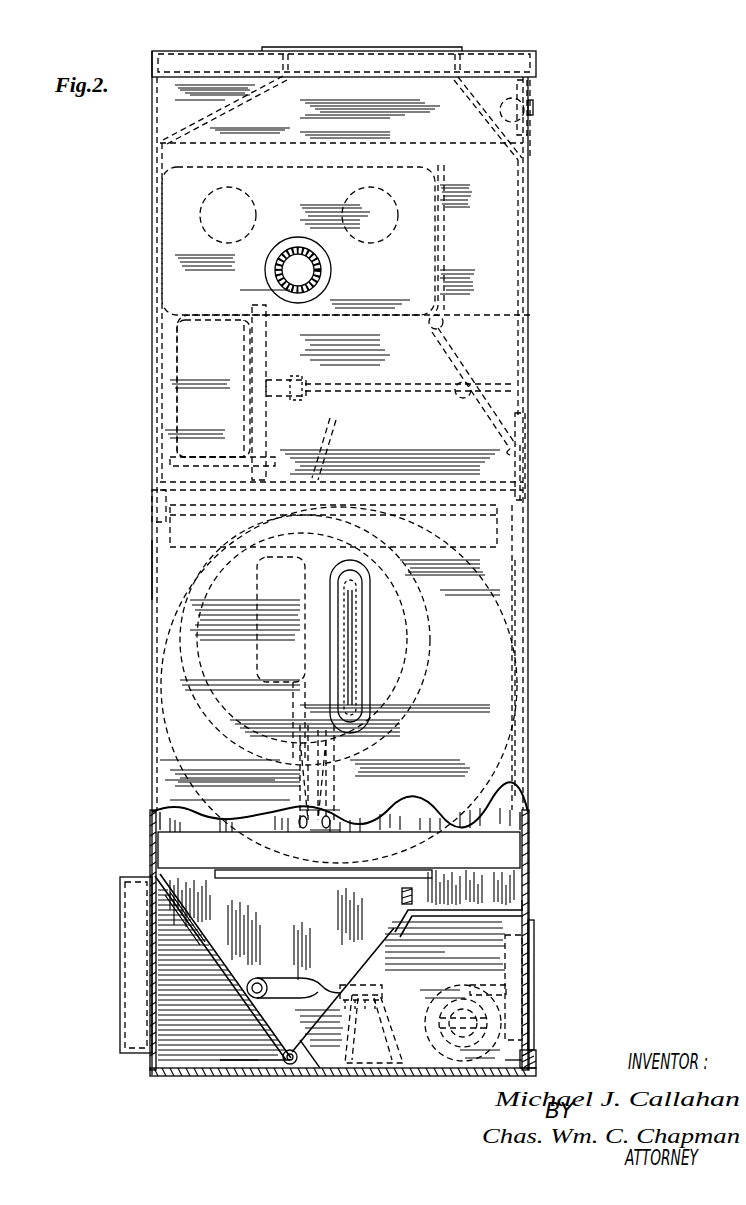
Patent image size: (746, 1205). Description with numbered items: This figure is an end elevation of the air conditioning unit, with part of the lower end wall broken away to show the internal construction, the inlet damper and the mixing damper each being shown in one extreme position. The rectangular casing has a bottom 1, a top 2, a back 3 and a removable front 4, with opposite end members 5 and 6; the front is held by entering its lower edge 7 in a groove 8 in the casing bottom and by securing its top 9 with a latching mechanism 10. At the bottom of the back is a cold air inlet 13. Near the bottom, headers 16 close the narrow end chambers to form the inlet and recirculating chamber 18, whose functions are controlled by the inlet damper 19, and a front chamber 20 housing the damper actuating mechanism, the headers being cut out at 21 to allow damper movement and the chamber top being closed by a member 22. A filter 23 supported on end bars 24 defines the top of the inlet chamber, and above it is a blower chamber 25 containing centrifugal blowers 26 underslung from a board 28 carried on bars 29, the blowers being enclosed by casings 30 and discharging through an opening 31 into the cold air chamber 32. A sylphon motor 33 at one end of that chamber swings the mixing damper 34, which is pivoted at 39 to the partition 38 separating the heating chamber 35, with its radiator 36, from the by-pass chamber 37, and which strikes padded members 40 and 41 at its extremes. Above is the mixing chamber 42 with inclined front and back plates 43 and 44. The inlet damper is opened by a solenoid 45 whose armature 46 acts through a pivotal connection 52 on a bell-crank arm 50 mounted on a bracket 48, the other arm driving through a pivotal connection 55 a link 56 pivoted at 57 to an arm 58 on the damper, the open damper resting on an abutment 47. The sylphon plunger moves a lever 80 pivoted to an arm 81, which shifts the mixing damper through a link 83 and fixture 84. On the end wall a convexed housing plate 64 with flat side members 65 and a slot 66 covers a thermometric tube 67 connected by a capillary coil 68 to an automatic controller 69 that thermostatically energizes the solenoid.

The bottom 1 is at (212, 1077).
The top 2 is at (510, 75).
The back 3 is at (142, 570).
The front 4 is at (540, 573).
The end member 5 is at (500, 650).
The end member 6 is at (150, 383).
The lower edge 7 is at (532, 1054).
The groove 8 is at (522, 1048).
The top of front 9 is at (538, 94).
The locking or latching mechanism 10 is at (532, 137).
The inlet 13 is at (122, 1044).
The header 16 is at (240, 1062).
The inlet and recirculating chamber 18 is at (342, 925).
The inlet and recirculating damper 19 is at (232, 975).
The front chamber 20 is at (454, 940).
The cut-out 21 is at (370, 940).
The member 22 is at (485, 908).
The filter 23 is at (170, 842).
The end bars 24 is at (342, 876).
The blower chamber 25 is at (508, 812).
The blowers 26 is at (430, 624).
The board 28 is at (158, 498).
The bars 29 is at (530, 520).
The blower casings 30 is at (388, 822).
The opening 31 is at (520, 496).
The cold air chamber 32 is at (526, 426).
The sylphon motor 33 is at (170, 345).
The mixing damper 34 is at (466, 362).
The heating chamber 35 is at (156, 298).
The heating element or radiator 36 is at (156, 243).
The by-pass chamber 37 is at (500, 247).
The partition 38 is at (446, 221).
The pivot 39 is at (446, 322).
The padded member 40 is at (526, 455).
The padded member 41 is at (338, 442).
The hot air or mixing chamber 42 is at (310, 108).
The front plate 43 is at (488, 120).
The back plate 44 is at (236, 100).
The electromagnet 45 is at (440, 1024).
The armature 46 is at (520, 1008).
The abutment 47 is at (404, 888).
The bracket 48 is at (352, 1046).
The arm 50 is at (478, 990).
The pivotal connection 52 is at (480, 986).
The pivotal connection 55 is at (322, 1046).
The link 56 is at (300, 982).
The pivotal connection 57 is at (280, 1050).
The arm 58 is at (242, 988).
The housing plate 64 is at (364, 676).
The side flat members 65 is at (366, 698).
The elongated slot 66 is at (352, 654).
The thermometric tube 67 is at (360, 598).
The capillary coil 68 is at (300, 780).
The automatic controller 69 is at (258, 652).
The lever 80 is at (285, 400).
The arm 81 is at (288, 382).
The link 83 is at (408, 394).
The fixture 84 is at (462, 400).